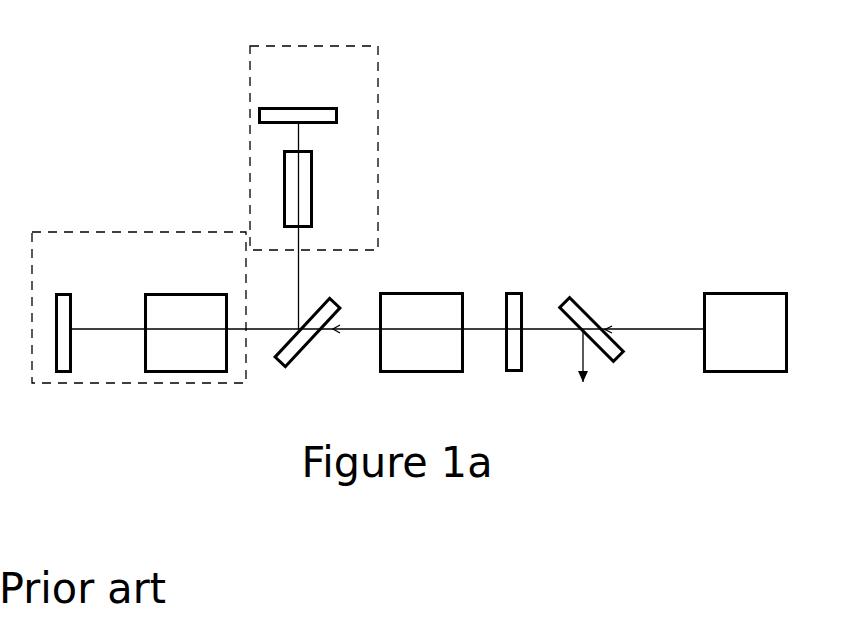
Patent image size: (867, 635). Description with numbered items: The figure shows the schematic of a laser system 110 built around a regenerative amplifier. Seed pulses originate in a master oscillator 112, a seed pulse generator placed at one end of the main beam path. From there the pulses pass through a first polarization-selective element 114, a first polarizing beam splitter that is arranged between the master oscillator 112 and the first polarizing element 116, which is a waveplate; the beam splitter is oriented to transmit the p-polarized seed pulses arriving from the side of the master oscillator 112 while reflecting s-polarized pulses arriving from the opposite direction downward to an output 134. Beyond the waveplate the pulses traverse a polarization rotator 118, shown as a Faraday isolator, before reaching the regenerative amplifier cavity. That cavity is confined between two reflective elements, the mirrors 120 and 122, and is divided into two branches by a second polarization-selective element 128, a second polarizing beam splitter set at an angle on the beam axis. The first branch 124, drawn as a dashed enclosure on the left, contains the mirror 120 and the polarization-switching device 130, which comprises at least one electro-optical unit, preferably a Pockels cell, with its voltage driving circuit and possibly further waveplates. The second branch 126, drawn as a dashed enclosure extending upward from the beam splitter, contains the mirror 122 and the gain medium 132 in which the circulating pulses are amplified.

The laser system 110 is at (173, 143).
The master oscillator 112 is at (745, 292).
The first polarization-selective element 114 is at (592, 317).
The first polarizing element 116 is at (512, 292).
The polarization rotator 118 is at (421, 292).
The mirror 120 is at (63, 292).
The mirror 122 is at (298, 105).
The first branch 124 is at (110, 228).
The second branch 126 is at (382, 158).
The second polarization-selective element 128 is at (302, 353).
The polarization-switching device 130 is at (174, 292).
The gain medium 132 is at (313, 183).
The output 134 is at (594, 373).